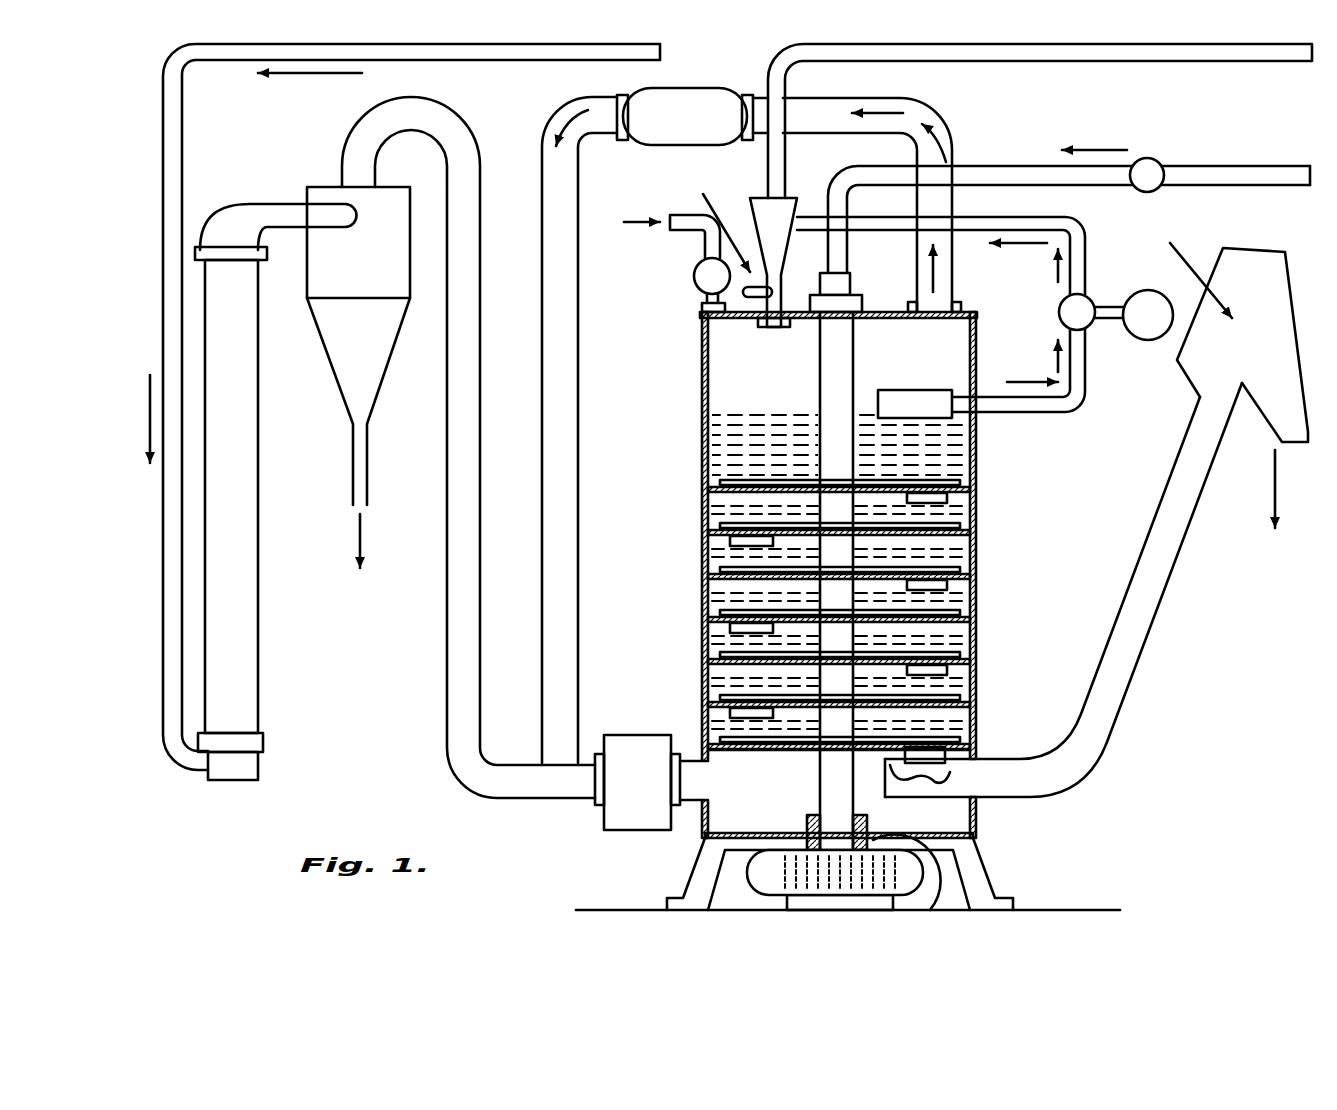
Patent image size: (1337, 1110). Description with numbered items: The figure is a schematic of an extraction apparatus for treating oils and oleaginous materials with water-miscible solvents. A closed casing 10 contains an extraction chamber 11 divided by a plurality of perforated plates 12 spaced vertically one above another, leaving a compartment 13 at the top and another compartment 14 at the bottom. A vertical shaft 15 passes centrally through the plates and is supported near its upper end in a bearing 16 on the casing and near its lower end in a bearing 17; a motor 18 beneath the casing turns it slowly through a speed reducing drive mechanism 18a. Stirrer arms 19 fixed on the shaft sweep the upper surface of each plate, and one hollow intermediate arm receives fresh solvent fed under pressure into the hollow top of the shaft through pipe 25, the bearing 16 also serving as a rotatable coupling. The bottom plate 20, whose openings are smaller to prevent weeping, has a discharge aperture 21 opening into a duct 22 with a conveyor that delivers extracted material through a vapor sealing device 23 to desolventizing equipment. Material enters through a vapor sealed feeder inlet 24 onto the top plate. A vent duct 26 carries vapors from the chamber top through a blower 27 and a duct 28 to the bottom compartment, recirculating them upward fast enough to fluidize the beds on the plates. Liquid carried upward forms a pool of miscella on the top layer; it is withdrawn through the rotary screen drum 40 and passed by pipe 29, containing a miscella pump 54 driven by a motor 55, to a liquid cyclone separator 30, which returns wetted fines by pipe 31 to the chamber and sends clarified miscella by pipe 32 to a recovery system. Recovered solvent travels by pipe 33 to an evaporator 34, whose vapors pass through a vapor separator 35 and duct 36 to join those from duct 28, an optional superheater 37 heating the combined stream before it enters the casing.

The closed casing 10 is at (977, 352).
The extraction chamber 11 is at (799, 363).
The perforated plates 12 is at (702, 505).
The top compartment 13 is at (748, 438).
The bottom compartment 14 is at (759, 803).
The vertical shaft 15 is at (840, 358).
The bearing 16 is at (867, 297).
The bearing 17 is at (813, 815).
The motor 18 is at (940, 880).
The speed reducing drive mechanism 18a is at (783, 872).
The stirrer arms 19 is at (702, 481).
The bottom plate 20 is at (728, 541).
The discharge aperture 21 is at (942, 768).
The duct 22 is at (1003, 778).
The vapor sealing device 23 is at (1275, 358).
The feeder inlet 24 is at (693, 276).
The pipe 25 is at (1000, 168).
The vent duct 26 is at (937, 197).
The blower 27 is at (703, 97).
The duct 28 is at (580, 300).
The pipe 29 is at (1042, 402).
The liquid cyclone separator 30 is at (783, 252).
The pipe 31 is at (775, 296).
The pipe 32 is at (785, 160).
The pipe 33 is at (483, 50).
The evaporator 34 is at (242, 507).
The vapor separator 35 is at (365, 336).
The duct 36 is at (470, 307).
The superheater 37 is at (644, 790).
The cylindrical drum 40 is at (888, 390).
The miscella pump 54 is at (1058, 306).
The motor 55 is at (1142, 337).